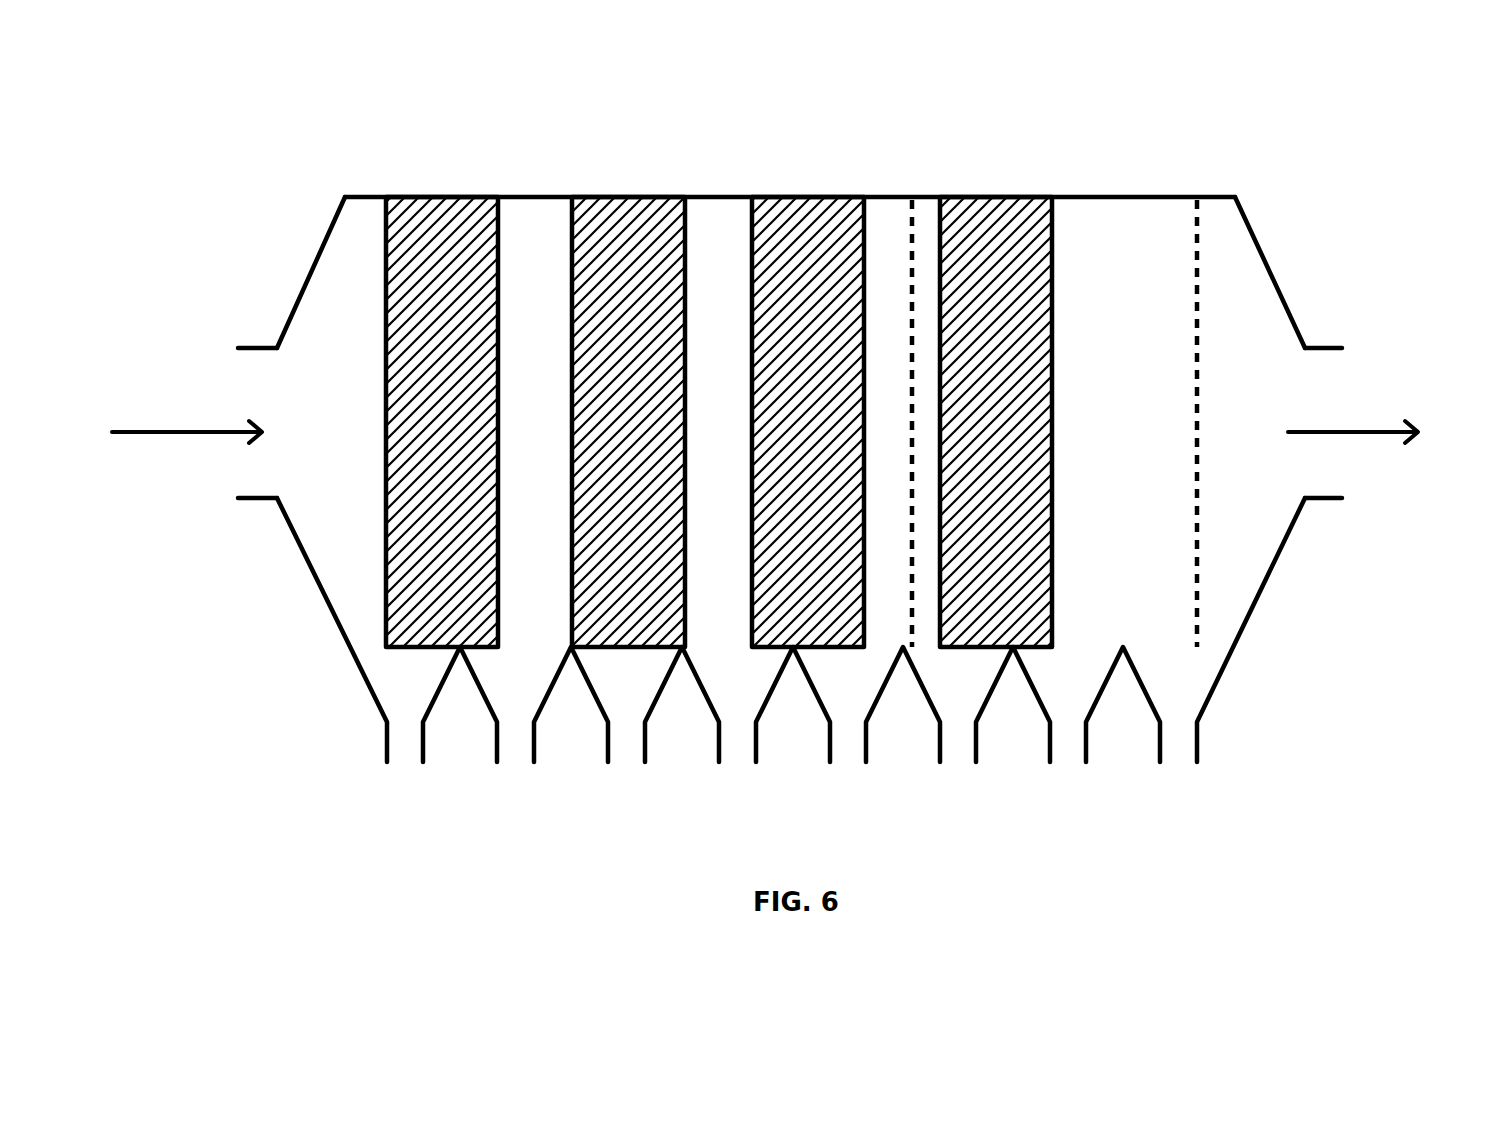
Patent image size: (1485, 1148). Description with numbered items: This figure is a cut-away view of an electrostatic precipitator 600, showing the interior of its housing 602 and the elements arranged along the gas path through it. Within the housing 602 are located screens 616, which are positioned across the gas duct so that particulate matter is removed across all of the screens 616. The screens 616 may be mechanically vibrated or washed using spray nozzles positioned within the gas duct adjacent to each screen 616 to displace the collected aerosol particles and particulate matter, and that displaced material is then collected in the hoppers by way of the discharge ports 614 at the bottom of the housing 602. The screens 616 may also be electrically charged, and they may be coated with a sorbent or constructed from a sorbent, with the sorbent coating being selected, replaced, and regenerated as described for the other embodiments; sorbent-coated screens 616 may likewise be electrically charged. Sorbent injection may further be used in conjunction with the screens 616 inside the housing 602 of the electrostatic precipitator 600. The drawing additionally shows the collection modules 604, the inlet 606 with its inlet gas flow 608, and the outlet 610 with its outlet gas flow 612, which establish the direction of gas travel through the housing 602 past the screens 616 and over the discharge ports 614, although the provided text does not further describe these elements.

The electrostatic precipitator 600 is at (482, 852).
The housing 602 is at (516, 197).
The collection modules 604 is at (604, 220).
The inlet 606 is at (255, 348).
The inlet gas flow 608 is at (195, 433).
The outlet 610 is at (1327, 347).
The outlet gas flow 612 is at (1375, 434).
The discharge ports 614 is at (645, 738).
The screens 616 is at (911, 237).